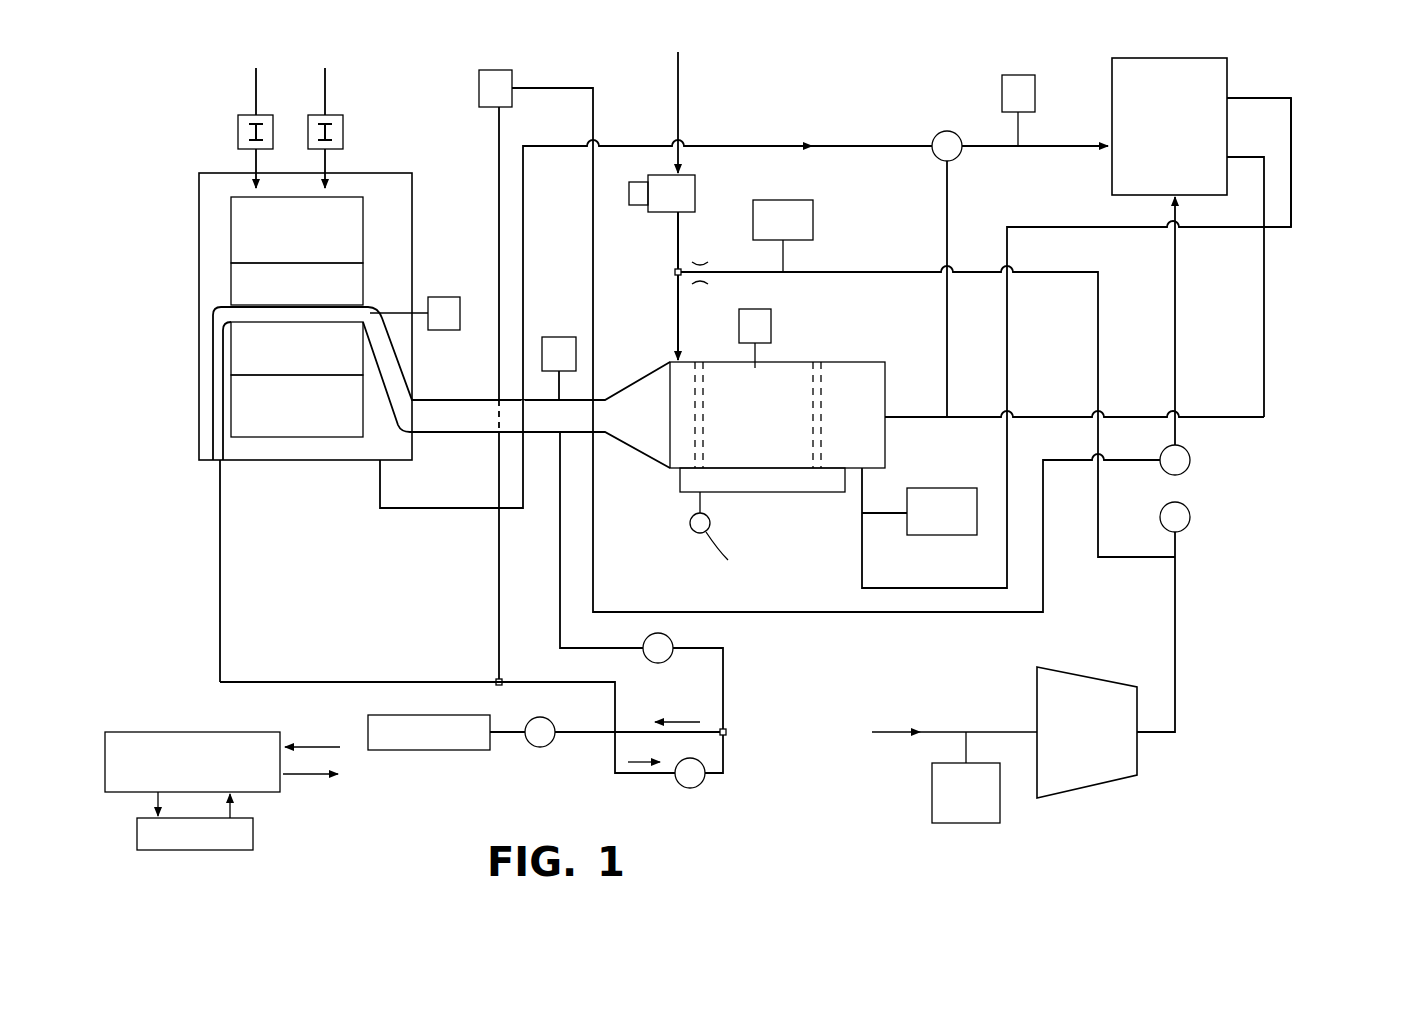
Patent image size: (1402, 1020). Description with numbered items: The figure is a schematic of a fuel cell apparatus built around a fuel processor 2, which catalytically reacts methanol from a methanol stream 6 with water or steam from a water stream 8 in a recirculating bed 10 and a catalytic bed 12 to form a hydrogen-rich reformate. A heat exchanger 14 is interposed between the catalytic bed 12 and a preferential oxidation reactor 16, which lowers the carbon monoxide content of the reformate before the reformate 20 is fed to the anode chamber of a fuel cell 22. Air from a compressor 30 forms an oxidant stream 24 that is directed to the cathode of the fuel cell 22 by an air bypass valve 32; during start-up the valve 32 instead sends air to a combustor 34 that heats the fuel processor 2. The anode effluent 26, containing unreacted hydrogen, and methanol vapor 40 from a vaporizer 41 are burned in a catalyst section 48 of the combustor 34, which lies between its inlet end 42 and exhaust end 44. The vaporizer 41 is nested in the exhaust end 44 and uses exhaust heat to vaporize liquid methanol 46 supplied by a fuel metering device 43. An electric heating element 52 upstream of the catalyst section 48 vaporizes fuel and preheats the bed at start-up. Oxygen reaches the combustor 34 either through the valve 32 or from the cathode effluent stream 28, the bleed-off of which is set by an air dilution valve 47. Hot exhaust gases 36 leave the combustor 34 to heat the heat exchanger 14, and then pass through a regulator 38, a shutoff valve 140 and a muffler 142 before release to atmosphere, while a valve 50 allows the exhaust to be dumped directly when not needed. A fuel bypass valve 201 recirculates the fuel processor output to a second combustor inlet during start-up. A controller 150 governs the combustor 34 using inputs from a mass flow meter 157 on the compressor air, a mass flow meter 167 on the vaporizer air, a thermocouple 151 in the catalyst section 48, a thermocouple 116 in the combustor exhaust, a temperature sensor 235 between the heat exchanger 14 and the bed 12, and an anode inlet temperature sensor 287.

The fuel processor 2 is at (180, 265).
The methanol stream 6 is at (248, 92).
The water stream 8 is at (333, 92).
The recirculating bed 10 is at (353, 240).
The catalytic bed 12 is at (353, 282).
The heat exchanger 14 is at (255, 347).
The preferential oxidation reactor 16 is at (255, 407).
The hydrogen-rich reformate 20 is at (410, 510).
The fuel cell 22 is at (1183, 169).
The oxidant stream 24 is at (1175, 298).
The anode effluent 26 is at (1264, 195).
The cathode effluent stream 28 is at (1291, 130).
The compressor 30 is at (1068, 690).
The air bypass valve 32 is at (1188, 463).
The combustor 34 is at (791, 358).
The exhaust gases 36 is at (445, 428).
The regulator 38 is at (693, 788).
The methanol vapor 40 is at (740, 492).
The vaporizer 41 is at (692, 457).
The inlet end 42 is at (878, 376).
The fuel metering device 43 is at (690, 185).
The exhaust end 44 is at (640, 437).
The liquid methanol 46 is at (675, 326).
The air dilution valve 47 is at (510, 70).
The catalyst section 48 is at (764, 455).
The valve 50 is at (668, 660).
The electric heating element 52 is at (822, 452).
The thermocouple 116 is at (559, 337).
The shutoff valve 140 is at (550, 745).
The muffler 142 is at (425, 752).
The controller 150 is at (182, 729).
The thermocouple 151 is at (739, 328).
The mass flow meter 157 is at (935, 535).
The mass flow meter 167 is at (785, 200).
The fuel bypass valve 201 is at (947, 131).
The temperature sensor thermocouple 235 is at (452, 297).
The anode inlet temperature sensor 287 is at (1030, 88).